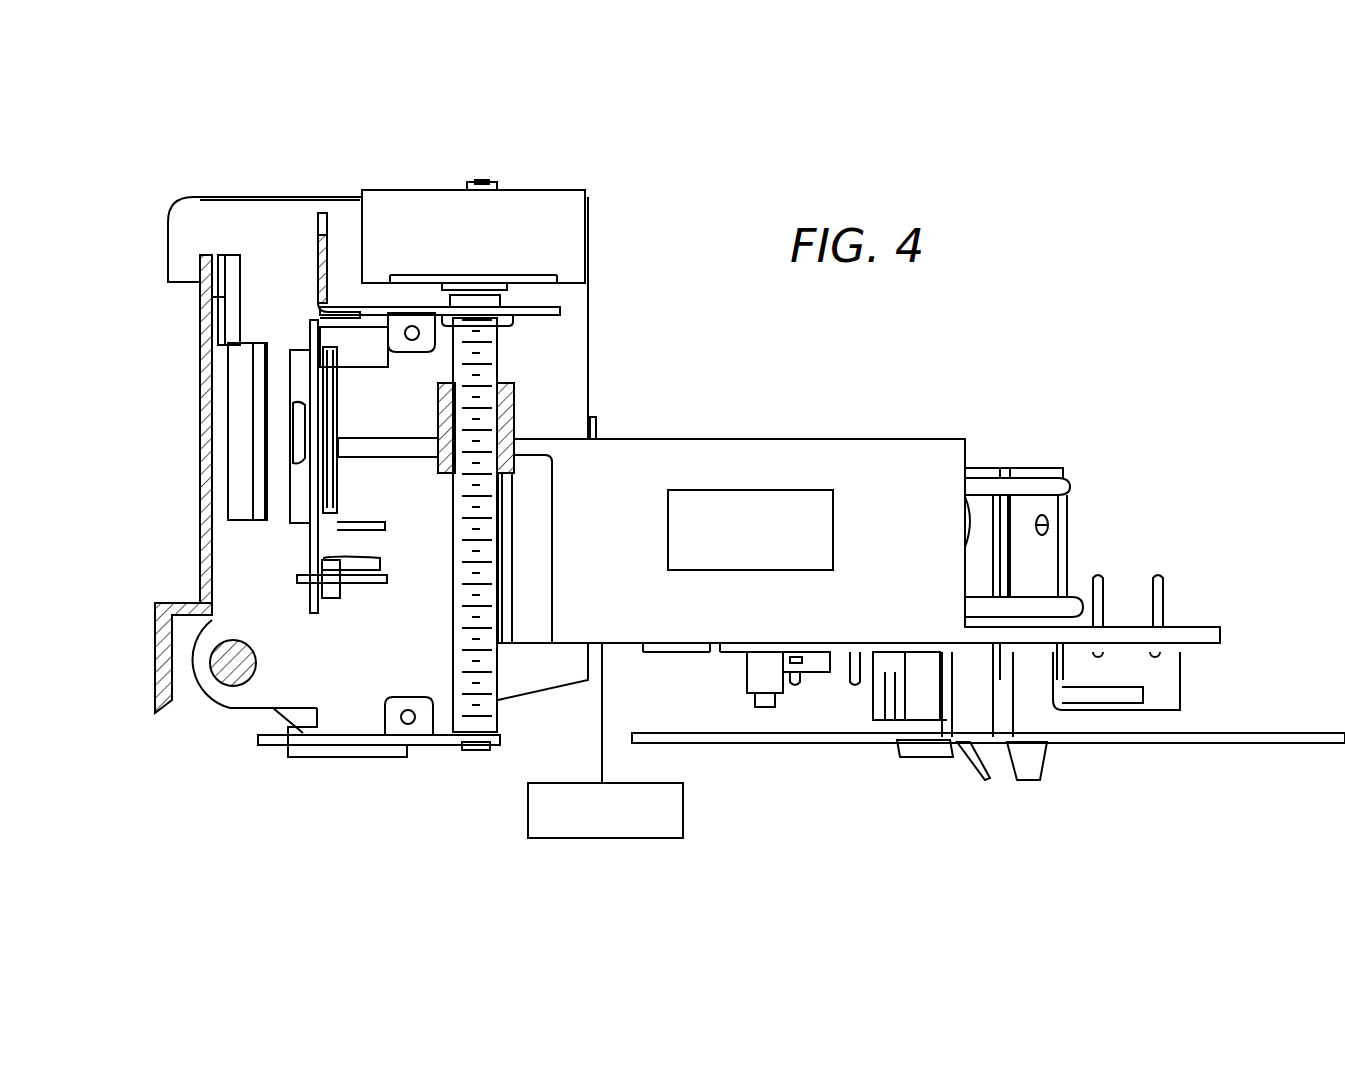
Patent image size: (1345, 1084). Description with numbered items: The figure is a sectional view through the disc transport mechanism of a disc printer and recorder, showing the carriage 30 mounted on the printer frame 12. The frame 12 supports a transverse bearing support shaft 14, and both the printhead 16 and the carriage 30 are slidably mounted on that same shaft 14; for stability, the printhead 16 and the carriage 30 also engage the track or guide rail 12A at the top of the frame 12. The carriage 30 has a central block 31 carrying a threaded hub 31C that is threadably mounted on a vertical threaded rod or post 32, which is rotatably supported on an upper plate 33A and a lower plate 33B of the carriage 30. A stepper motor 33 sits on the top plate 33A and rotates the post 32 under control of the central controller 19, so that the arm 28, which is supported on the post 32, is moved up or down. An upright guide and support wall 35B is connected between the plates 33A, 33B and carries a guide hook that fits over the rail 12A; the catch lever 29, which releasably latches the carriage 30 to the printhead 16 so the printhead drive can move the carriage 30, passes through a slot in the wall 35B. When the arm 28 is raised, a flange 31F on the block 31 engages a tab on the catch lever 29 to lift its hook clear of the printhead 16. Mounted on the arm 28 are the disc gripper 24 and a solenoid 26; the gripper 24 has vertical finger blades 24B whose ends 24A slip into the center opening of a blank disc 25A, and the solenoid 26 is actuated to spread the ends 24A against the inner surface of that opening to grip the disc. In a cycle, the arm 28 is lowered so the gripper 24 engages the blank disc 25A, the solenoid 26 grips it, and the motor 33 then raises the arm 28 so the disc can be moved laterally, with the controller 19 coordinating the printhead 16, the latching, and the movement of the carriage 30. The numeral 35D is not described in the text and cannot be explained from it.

The frame 12 is at (198, 537).
The track 12A is at (218, 262).
The bearing support shaft 14 is at (257, 661).
The printhead 16 is at (545, 388).
The central controller 19 is at (605, 840).
The disc gripper 24 is at (1078, 556).
The ends of the gripper blades 24A is at (1023, 775).
The finger blades 24B is at (1032, 468).
The blank disc 25A is at (1225, 745).
The solenoid 26 is at (773, 570).
The arm 28 is at (828, 462).
The catch lever 29 is at (316, 243).
The carriage 30 is at (350, 716).
The central block 31 is at (515, 385).
The threaded hub 31C is at (440, 397).
The flange 31F is at (350, 300).
The threaded rod 32 is at (485, 665).
The stepper motor 33 is at (525, 215).
The upper plate 33A is at (540, 307).
The lower plate 33B is at (447, 745).
The upright guide and support wall 35B is at (290, 205).
The side flange 35D is at (327, 212).